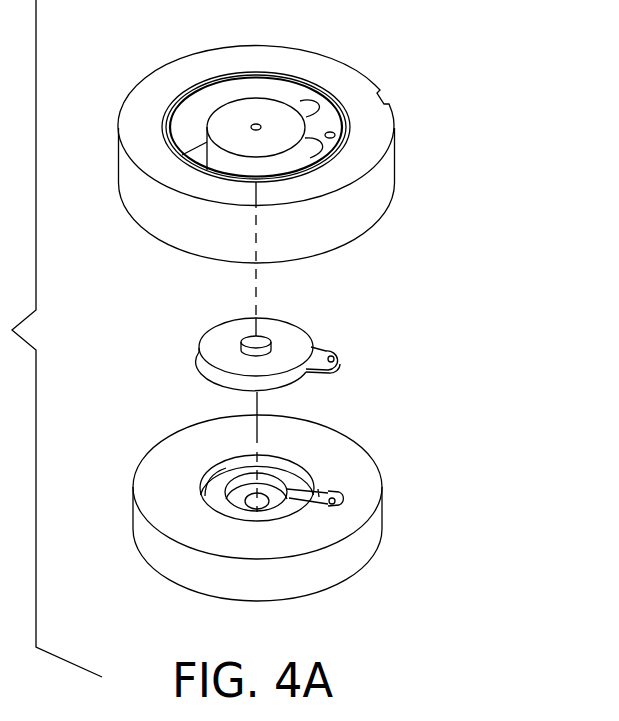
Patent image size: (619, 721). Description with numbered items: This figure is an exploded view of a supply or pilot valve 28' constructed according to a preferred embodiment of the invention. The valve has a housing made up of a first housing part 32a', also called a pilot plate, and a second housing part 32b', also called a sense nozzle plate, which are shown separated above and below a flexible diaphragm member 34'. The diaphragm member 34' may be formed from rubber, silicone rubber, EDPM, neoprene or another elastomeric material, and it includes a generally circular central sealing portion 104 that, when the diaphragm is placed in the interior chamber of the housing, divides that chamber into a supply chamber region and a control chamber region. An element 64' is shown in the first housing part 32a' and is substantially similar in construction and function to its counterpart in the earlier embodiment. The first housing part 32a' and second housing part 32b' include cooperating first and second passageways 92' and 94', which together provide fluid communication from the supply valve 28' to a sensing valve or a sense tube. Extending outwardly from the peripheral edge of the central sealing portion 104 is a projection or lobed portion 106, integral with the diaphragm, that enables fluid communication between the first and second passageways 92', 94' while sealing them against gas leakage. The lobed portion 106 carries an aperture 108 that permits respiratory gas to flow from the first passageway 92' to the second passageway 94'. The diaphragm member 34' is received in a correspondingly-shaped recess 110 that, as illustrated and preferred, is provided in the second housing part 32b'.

The supply valve 28' is at (305, 302).
The first housing part 32a' is at (337, 160).
The second housing part 32b' is at (272, 496).
The element 64' is at (288, 67).
The first passageway 92' is at (382, 70).
The flexible diaphragm member 34' is at (311, 315).
The central sealing portion 104 is at (277, 332).
The projection or lobed portion 106 is at (359, 362).
The aperture 108 is at (330, 356).
The second passageway 94' is at (382, 465).
The recess 110 is at (205, 495).